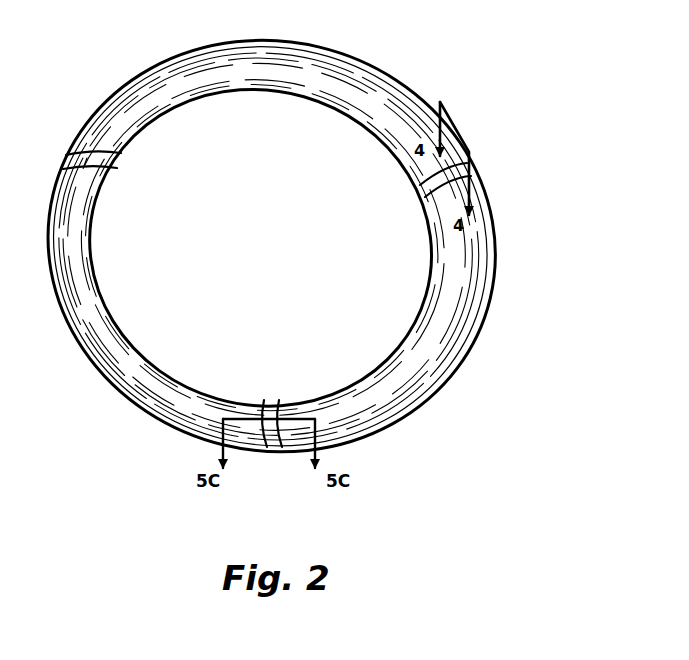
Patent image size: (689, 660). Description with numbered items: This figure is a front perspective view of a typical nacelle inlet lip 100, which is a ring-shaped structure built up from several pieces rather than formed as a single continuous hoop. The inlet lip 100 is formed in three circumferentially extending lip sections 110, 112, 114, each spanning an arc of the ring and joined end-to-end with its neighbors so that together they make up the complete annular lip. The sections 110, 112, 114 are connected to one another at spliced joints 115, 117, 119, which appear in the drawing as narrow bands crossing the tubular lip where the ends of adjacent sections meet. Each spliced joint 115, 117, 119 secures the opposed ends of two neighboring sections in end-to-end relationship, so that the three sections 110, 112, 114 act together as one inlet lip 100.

The nacelle inlet lip 100 is at (432, 50).
The lip section 110 is at (160, 88).
The lip section 112 is at (437, 345).
The lip section 114 is at (145, 385).
The spliced joint 115 is at (264, 405).
The spliced joint 117 is at (110, 160).
The spliced joint 119 is at (432, 175).